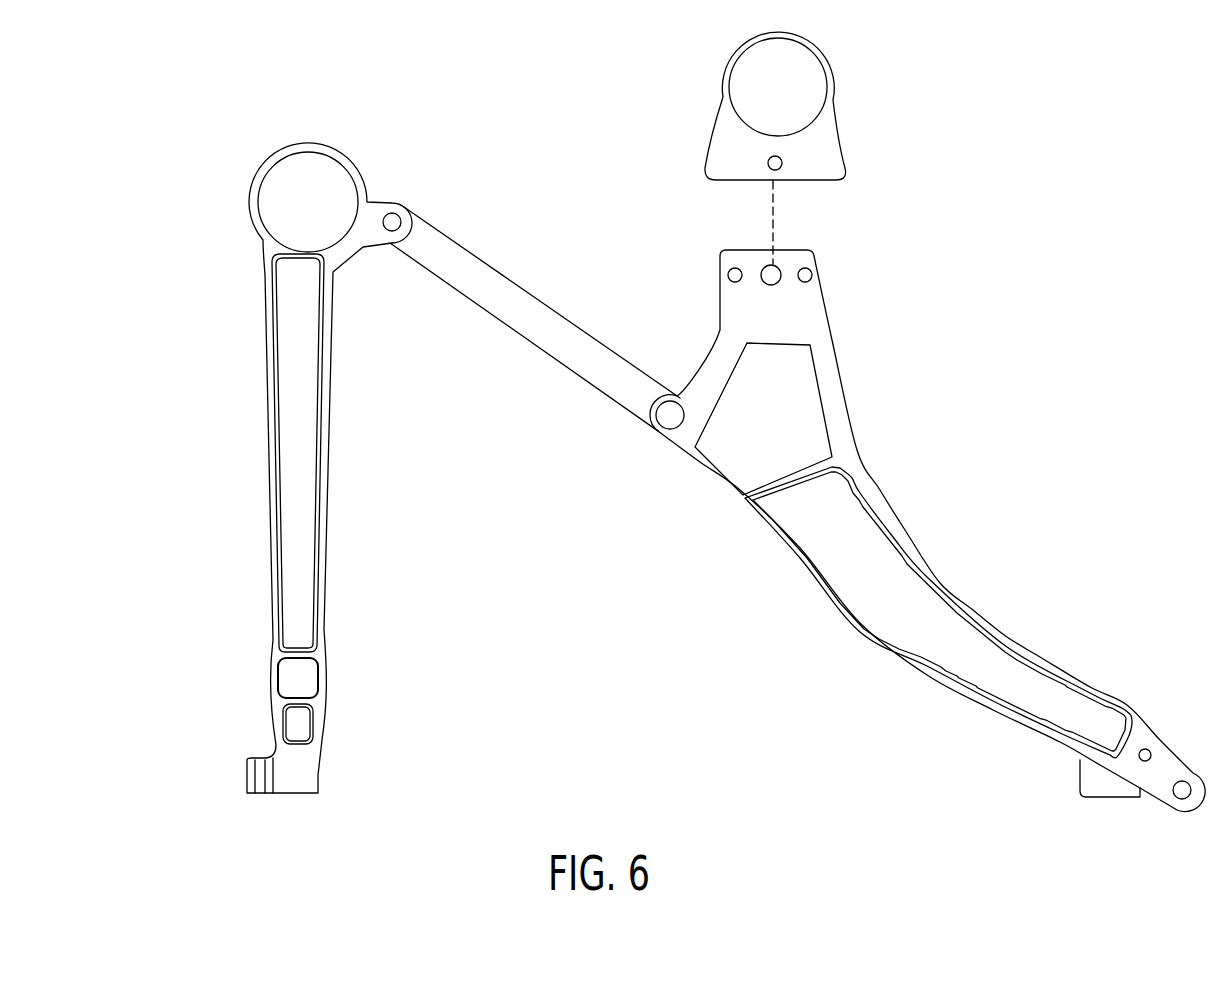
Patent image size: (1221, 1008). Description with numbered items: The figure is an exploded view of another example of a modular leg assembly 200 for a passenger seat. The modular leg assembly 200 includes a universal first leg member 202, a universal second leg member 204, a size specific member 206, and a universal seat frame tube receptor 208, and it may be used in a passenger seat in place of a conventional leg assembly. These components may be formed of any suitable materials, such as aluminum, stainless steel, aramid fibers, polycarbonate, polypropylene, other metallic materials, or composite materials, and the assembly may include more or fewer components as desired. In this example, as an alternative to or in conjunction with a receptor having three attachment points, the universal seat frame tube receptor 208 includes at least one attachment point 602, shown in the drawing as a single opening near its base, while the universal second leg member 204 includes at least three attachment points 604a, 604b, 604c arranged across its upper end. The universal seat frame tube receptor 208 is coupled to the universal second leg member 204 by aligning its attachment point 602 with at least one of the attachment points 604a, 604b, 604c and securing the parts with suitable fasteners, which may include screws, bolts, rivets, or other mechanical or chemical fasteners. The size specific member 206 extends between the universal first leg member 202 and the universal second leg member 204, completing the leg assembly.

The modular leg assembly 200 is at (165, 199).
The universal first leg member 202 is at (295, 425).
The universal second leg member 204 is at (998, 651).
The size specific member 206 is at (460, 257).
The universal seat frame tube receptor 208 is at (823, 138).
The attachment point 602 is at (768, 159).
The attachment point 604a is at (731, 268).
The attachment point 604b is at (765, 266).
The attachment point 604c is at (806, 284).